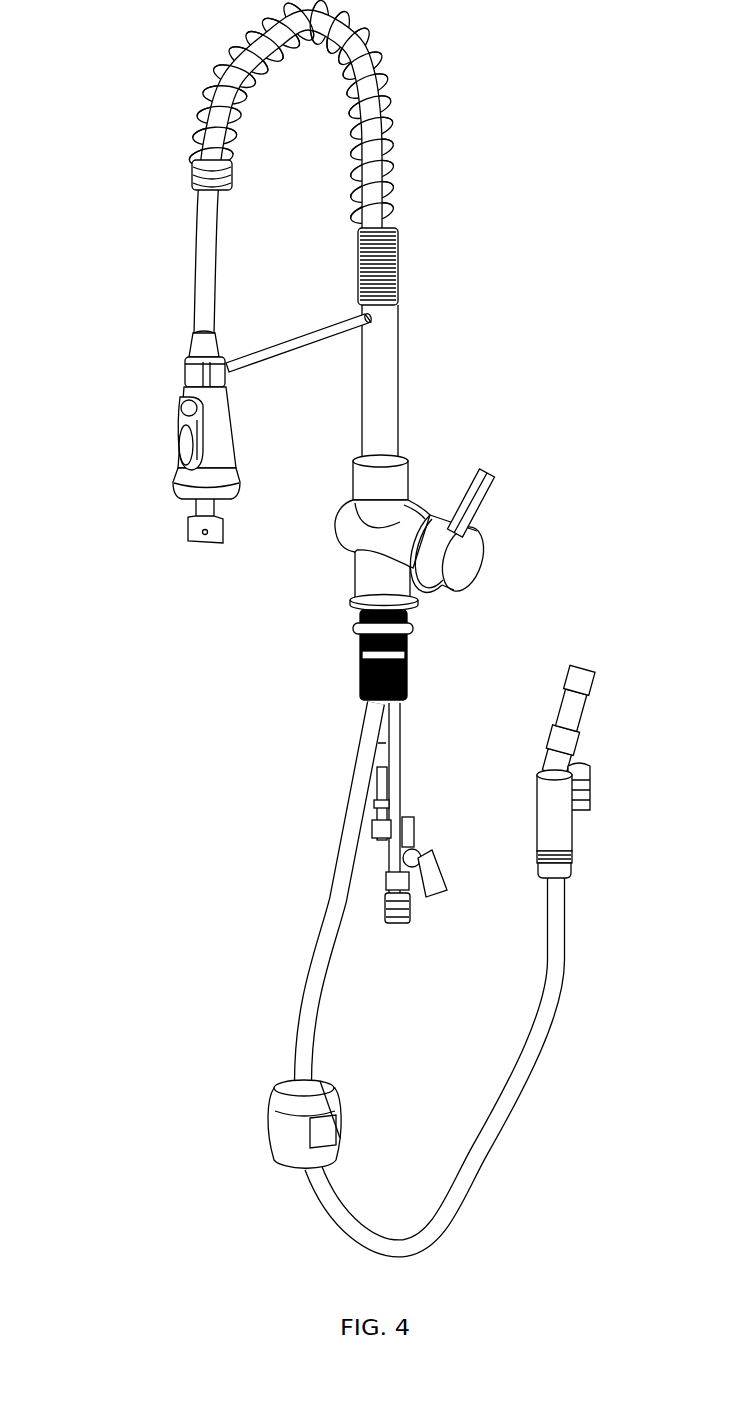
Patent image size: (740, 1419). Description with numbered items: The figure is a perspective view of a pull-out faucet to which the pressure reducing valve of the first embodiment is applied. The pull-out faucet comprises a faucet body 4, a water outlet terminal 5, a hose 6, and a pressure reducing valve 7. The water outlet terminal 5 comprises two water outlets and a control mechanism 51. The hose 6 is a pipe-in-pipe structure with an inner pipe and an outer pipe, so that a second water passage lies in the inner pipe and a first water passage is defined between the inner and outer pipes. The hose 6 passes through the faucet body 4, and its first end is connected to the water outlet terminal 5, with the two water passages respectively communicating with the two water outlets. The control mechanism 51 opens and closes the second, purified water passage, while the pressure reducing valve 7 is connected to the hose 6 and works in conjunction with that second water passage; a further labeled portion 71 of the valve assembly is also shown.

The faucet body 4 is at (405, 480).
The water outlet terminal 5 is at (210, 447).
The control mechanism 51 is at (185, 443).
The hose 6 is at (310, 975).
The pressure reducing valve 7 is at (547, 817).
The connecting nut 71 is at (573, 842).